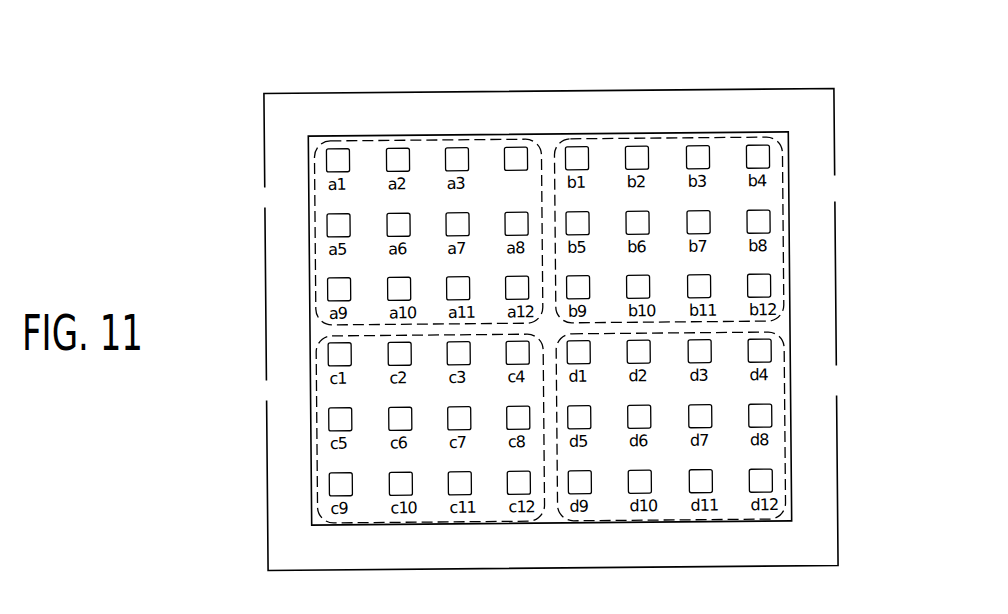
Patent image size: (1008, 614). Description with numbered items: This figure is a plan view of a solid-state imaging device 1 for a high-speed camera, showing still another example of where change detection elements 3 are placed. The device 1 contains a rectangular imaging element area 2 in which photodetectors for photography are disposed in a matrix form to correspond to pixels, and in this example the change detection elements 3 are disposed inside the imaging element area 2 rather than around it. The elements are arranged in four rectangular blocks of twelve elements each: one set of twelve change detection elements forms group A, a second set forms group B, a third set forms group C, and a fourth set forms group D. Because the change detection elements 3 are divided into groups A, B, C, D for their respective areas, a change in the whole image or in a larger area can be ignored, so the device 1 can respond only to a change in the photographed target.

The solid-state imaging device 1 is at (803, 91).
The imaging element area 2 is at (790, 294).
The change detection elements 3 is at (519, 156).
The group A is at (308, 165).
The group B is at (793, 163).
The group C is at (308, 360).
The group D is at (793, 356).